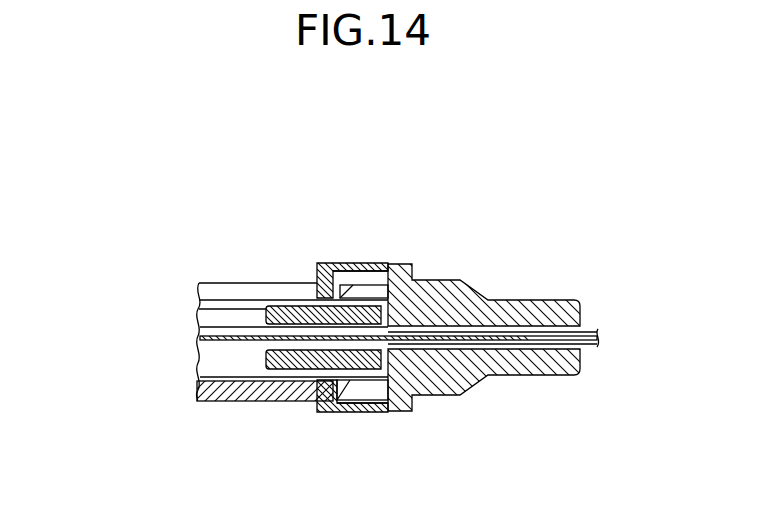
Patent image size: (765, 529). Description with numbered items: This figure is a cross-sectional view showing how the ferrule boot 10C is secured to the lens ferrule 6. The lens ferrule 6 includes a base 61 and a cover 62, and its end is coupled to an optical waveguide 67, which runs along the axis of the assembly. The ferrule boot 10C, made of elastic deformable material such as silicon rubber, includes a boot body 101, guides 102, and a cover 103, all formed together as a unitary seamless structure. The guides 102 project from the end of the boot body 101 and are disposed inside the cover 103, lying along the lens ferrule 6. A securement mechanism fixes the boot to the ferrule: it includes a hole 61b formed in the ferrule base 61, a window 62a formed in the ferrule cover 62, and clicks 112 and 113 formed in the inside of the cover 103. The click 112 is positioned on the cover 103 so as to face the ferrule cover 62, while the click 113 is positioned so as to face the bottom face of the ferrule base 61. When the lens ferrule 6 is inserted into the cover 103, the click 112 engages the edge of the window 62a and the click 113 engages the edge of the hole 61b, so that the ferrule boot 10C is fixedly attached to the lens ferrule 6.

The lens ferrule 6 is at (104, 163).
The base 61 is at (196, 412).
The hole 61b is at (300, 392).
The cover 62 is at (193, 272).
The window 62a is at (212, 292).
The optical waveguide 67 is at (214, 341).
The boot body 101 is at (566, 312).
The guides 102 is at (293, 313).
The cover 103 is at (373, 267).
The ferrule boot 10C is at (497, 289).
The click 112 is at (320, 281).
The click 113 is at (322, 400).